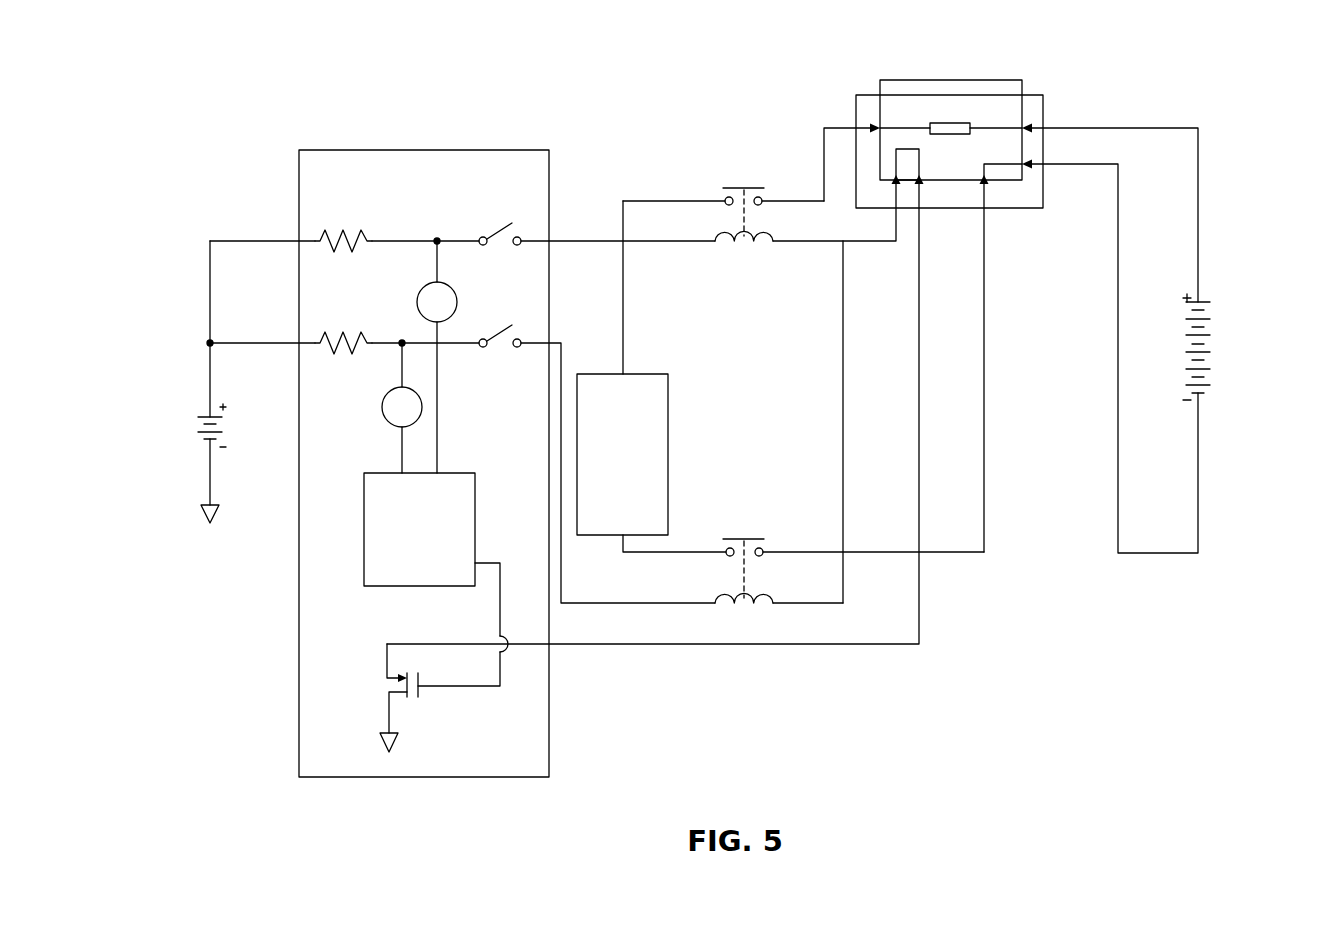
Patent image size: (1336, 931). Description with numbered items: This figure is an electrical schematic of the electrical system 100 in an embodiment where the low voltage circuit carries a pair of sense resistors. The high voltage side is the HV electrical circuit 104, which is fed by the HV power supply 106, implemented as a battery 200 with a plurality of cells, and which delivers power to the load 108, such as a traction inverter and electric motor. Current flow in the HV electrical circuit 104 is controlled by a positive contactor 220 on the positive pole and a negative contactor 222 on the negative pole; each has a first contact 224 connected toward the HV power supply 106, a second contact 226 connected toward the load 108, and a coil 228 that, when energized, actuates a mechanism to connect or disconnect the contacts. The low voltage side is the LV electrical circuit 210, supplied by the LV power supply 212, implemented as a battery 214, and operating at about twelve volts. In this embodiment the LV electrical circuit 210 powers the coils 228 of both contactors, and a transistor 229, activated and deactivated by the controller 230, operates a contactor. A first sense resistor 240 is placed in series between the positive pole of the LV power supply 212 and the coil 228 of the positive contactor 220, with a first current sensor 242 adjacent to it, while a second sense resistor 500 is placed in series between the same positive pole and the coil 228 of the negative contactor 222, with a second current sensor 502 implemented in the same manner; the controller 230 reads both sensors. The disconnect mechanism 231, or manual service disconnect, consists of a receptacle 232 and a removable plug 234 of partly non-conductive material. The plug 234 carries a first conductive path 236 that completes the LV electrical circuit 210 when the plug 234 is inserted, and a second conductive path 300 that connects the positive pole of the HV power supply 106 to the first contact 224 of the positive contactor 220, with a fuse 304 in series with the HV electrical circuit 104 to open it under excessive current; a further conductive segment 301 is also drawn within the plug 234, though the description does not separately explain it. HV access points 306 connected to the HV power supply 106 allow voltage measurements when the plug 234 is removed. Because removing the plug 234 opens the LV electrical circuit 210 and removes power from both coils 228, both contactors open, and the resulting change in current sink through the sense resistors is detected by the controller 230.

The electrical system 100 is at (603, 692).
The HV electrical circuit 104 is at (822, 148).
The HV power supply 106 is at (1237, 320).
The load 108 is at (668, 453).
The battery 200 is at (1202, 300).
The LV electrical circuit 210 is at (210, 285).
The LV power supply 212 is at (171, 438).
The battery 214 is at (208, 412).
The positive contactor 220 is at (736, 172).
The negative contactor 222 is at (746, 532).
The first contact 224 is at (764, 206).
The second contact 226 is at (725, 207).
The coil 228 is at (771, 243).
The transistor 229 is at (420, 695).
The controller 230 is at (476, 473).
The disconnect mechanism 231 is at (965, 144).
The receptacle 232 is at (925, 158).
The plug 234 is at (959, 167).
The first conductive path 236 is at (921, 167).
The first sense resistor 240 is at (352, 228).
The first current sensor 242 is at (458, 300).
The second conductive path 300 is at (986, 127).
The conductor 301 is at (1002, 166).
The fuse 304 is at (950, 122).
The HV access point 306 is at (1030, 126).
The second sense resistor 500 is at (352, 330).
The second current sensor 502 is at (381, 404).